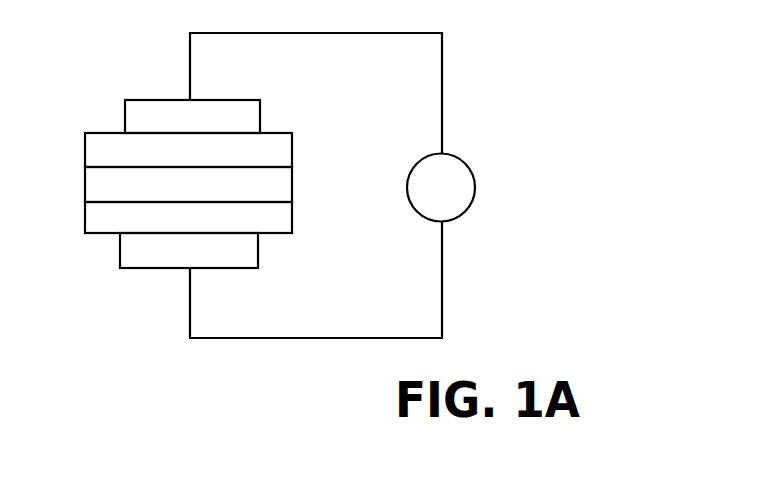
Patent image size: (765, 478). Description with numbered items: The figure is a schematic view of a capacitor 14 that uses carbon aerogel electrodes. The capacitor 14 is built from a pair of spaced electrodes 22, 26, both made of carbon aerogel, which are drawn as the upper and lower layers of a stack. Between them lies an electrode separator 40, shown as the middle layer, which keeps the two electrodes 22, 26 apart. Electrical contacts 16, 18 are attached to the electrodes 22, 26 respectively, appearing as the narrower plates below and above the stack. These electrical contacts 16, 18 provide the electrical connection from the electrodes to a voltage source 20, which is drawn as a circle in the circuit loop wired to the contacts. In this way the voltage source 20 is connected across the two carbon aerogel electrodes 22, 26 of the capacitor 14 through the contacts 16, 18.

The capacitor 14 is at (192, 201).
The electrical contact 16 is at (258, 250).
The electrical contact 18 is at (260, 117).
The voltage source 20 is at (470, 161).
The electrode 22 is at (293, 218).
The electrode 26 is at (293, 152).
The electrode separator 40 is at (293, 187).